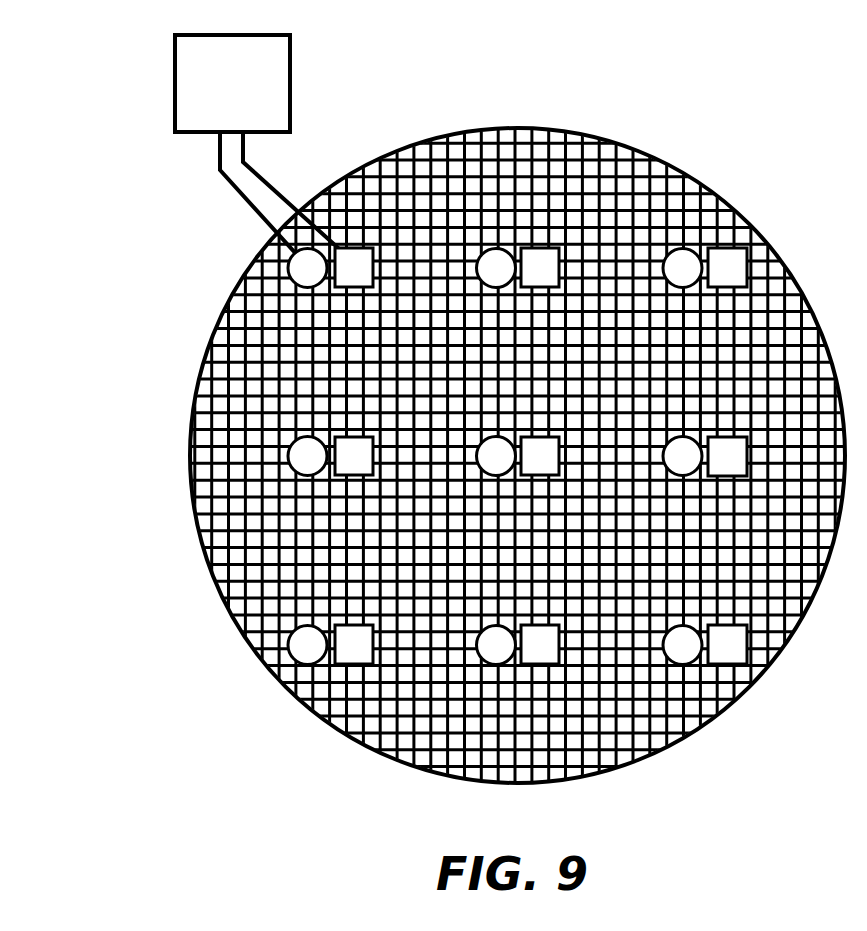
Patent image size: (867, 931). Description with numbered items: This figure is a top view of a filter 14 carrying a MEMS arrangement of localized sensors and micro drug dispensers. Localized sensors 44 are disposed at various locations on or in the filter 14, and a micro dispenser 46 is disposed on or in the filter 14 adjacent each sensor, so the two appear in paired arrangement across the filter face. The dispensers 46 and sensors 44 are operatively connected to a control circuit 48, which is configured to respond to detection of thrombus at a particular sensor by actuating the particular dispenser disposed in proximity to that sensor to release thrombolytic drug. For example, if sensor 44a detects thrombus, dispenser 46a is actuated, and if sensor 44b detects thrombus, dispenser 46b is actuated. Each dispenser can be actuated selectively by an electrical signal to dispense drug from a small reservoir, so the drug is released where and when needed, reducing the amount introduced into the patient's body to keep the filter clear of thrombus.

The filter 14 is at (700, 181).
The localized sensor 44 is at (492, 265).
The micro dispenser 46 is at (537, 266).
The sensor 44a is at (310, 457).
The dispenser 46a is at (358, 462).
The sensor 44b is at (309, 648).
The dispenser 46b is at (355, 650).
The control circuit 48 is at (266, 151).